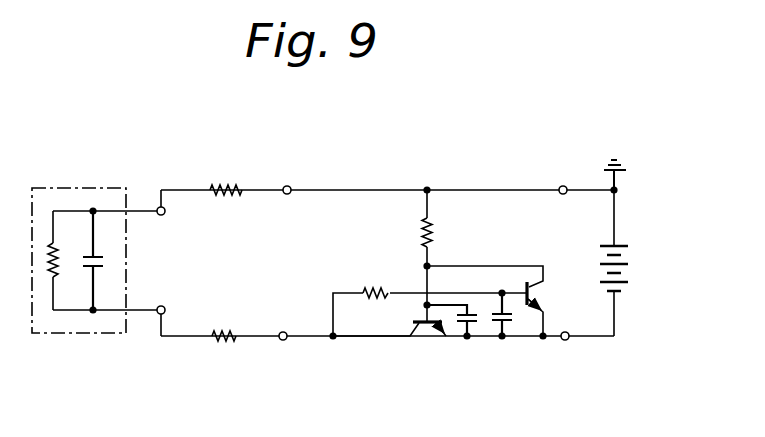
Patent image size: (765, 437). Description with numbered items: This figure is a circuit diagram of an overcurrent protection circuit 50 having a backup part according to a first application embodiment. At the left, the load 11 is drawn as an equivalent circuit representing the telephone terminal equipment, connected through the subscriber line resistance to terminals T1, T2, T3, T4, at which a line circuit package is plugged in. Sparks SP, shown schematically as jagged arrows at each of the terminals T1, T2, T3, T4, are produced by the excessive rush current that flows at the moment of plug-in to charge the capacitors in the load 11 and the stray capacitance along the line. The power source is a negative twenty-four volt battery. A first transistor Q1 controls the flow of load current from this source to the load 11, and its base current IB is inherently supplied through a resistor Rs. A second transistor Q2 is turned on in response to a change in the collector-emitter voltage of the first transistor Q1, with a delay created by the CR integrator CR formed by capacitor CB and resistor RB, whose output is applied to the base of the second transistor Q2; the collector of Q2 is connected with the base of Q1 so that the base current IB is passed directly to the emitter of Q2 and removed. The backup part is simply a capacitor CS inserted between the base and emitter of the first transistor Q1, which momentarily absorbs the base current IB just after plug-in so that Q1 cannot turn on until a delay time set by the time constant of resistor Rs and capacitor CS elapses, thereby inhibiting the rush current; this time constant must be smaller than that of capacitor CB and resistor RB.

The load 11 is at (126, 260).
The overcurrent protection circuit 50 is at (453, 213).
The terminal T1 is at (285, 186).
The terminal T2 is at (288, 340).
The terminal T3 is at (560, 186).
The terminal T4 is at (570, 340).
The spark SP is at (291, 187).
The resistor Rs is at (425, 222).
The resistor RB is at (378, 289).
The base current IB is at (415, 300).
The integrator CR is at (458, 281).
The first transistor Q1 is at (428, 341).
The second transistor Q2 is at (548, 296).
The capacitor CS is at (484, 327).
The capacitor CB is at (526, 327).